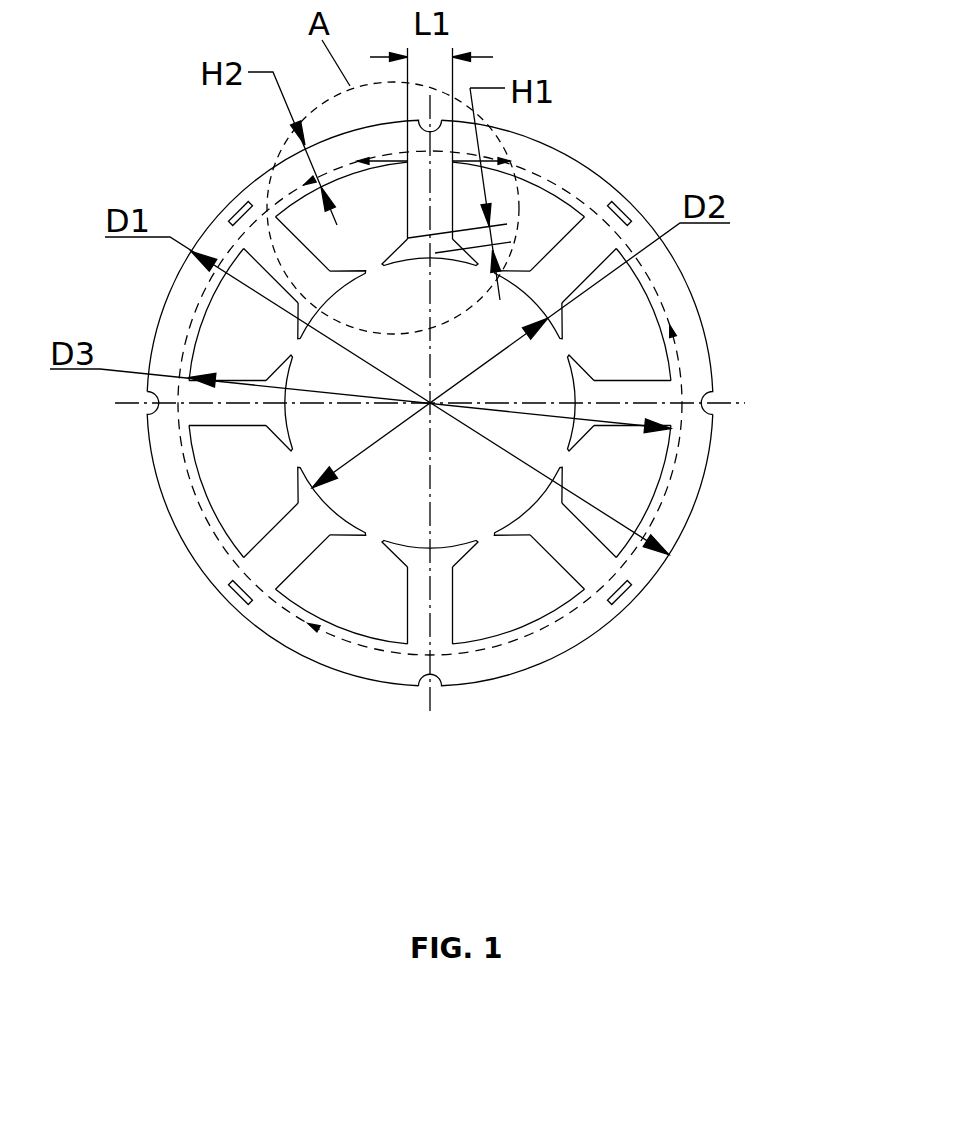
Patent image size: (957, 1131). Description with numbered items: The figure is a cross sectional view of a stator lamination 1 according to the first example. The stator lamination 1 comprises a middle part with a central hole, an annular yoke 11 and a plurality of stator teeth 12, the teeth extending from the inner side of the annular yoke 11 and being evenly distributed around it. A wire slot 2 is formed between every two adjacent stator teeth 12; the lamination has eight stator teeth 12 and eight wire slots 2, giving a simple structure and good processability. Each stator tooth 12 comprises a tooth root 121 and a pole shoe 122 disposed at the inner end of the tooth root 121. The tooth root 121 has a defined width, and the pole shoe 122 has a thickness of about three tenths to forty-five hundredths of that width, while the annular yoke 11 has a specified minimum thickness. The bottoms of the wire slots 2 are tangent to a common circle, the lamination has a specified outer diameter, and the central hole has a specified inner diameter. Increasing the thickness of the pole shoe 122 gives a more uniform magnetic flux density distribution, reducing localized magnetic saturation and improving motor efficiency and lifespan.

The stator lamination 1 is at (475, 405).
The wire slot 2 is at (618, 343).
The annular yoke 11 is at (255, 197).
The stator tooth 12 is at (536, 359).
The tooth root 121 is at (575, 252).
The pole shoe 122 is at (548, 238).